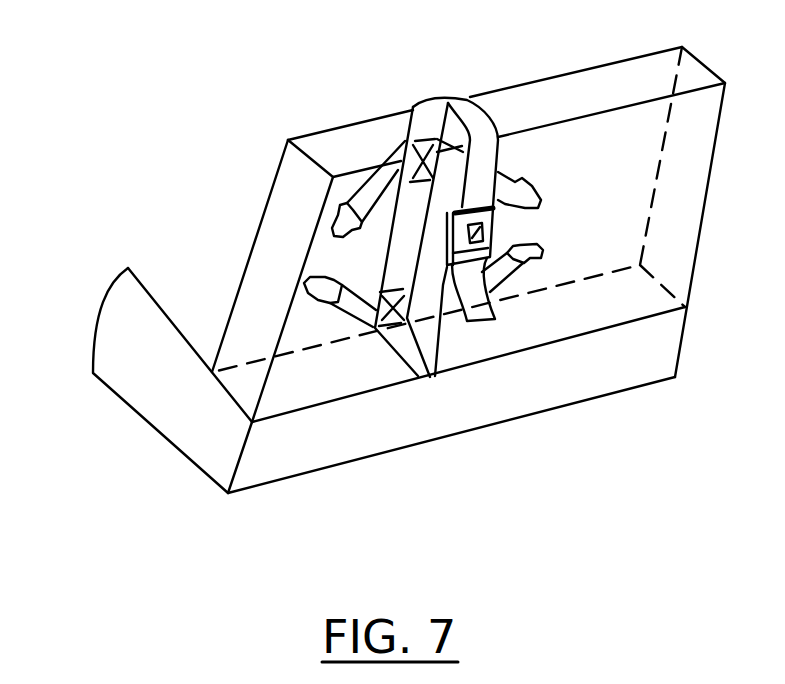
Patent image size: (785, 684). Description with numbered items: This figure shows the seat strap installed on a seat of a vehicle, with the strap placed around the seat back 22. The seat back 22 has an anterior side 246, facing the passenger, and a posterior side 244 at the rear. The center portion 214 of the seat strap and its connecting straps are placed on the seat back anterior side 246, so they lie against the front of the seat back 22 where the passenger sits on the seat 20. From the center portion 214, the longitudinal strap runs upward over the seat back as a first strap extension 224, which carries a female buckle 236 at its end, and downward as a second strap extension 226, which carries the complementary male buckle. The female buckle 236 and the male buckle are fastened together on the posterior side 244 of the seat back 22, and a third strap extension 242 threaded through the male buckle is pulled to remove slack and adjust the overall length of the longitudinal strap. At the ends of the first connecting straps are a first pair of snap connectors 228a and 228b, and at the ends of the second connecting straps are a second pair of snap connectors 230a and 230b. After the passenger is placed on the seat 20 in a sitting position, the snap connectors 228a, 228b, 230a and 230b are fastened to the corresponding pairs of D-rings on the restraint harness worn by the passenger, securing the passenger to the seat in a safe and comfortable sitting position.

The seat 20 is at (97, 313).
The seat back 22 is at (693, 67).
The center portion 214 is at (380, 270).
The first strap extension 224 is at (451, 106).
The second strap extension 226 is at (457, 360).
The snap connector 228a is at (530, 200).
The snap connector 228b is at (333, 230).
The snap connector 230a is at (528, 258).
The snap connector 230b is at (323, 303).
The female buckle 236 is at (495, 222).
The third strap extension 242 is at (495, 239).
The posterior side 244 is at (688, 183).
The anterior side 246 is at (347, 125).